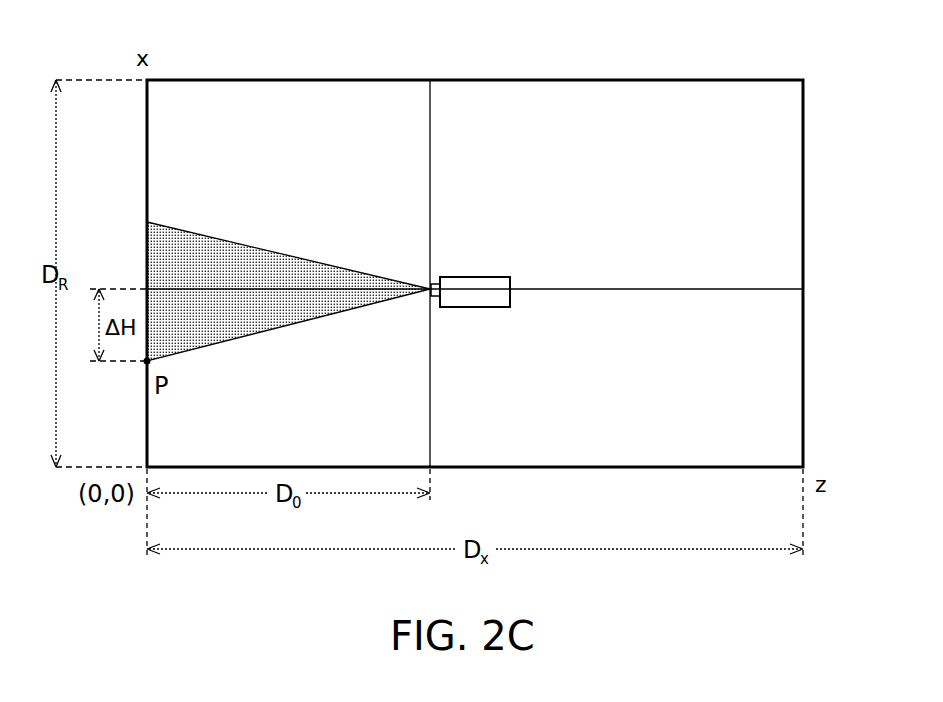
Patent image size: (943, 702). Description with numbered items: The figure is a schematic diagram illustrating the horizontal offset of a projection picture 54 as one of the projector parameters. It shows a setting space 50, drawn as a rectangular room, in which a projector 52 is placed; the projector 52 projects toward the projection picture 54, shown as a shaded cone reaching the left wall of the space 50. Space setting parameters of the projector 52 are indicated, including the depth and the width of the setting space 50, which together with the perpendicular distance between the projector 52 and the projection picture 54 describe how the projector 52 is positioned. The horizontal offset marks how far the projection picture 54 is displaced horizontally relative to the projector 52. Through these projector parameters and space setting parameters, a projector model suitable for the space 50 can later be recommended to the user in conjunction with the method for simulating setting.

The setting space 50 is at (635, 80).
The projector 52 is at (511, 283).
The projection picture 54 is at (150, 248).